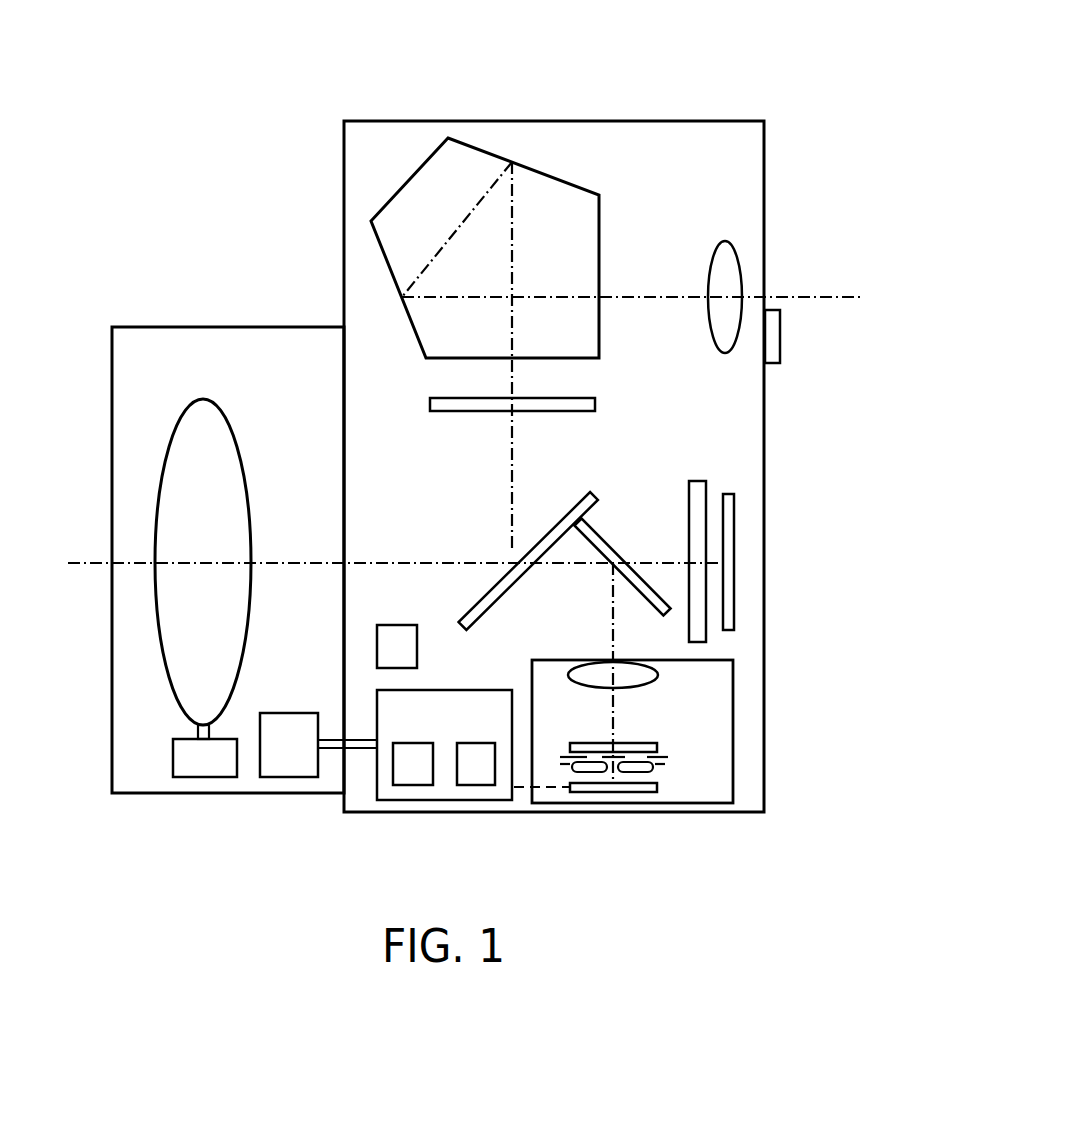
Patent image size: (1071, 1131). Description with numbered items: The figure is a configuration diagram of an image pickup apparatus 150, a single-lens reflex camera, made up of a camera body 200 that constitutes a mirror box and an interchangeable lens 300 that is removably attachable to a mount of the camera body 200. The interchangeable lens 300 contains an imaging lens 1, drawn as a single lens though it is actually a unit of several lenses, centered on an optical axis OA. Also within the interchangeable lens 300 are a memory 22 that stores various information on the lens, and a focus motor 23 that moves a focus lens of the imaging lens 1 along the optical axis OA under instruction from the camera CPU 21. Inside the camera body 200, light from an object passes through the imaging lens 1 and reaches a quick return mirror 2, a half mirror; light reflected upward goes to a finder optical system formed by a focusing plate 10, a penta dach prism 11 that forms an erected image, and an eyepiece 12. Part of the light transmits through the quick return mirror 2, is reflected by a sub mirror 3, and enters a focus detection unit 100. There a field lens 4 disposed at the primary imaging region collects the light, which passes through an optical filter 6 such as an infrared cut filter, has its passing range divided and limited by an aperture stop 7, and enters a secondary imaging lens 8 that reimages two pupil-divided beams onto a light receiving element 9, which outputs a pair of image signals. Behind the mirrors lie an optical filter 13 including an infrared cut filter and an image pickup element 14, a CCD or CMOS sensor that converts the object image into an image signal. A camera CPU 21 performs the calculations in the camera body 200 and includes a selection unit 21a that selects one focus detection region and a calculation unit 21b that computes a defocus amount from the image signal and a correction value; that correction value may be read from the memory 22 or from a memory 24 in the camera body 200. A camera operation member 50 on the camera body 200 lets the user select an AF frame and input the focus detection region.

The image pickup apparatus 150 is at (826, 33).
The camera body 200 is at (612, 143).
The interchangeable lens 300 is at (148, 350).
The focus detection unit 100 is at (592, 803).
The penta dach prism 11 is at (438, 182).
The focusing plate 10 is at (440, 398).
The eyepiece 12 is at (735, 253).
The camera operation member 50 is at (780, 342).
The quick return mirror 2 is at (480, 596).
The sub mirror 3 is at (592, 525).
The optical filter 13 is at (707, 484).
The image pickup element 14 is at (734, 594).
The field lens 4 is at (657, 672).
The optical filter 6 is at (657, 746).
The aperture stop 7 is at (665, 757).
The light receiving element 9 is at (657, 787).
The secondary imaging lens 8 is at (633, 773).
The imaging lens 1 is at (173, 687).
The optical axis OA is at (94, 562).
The focus motor 23 is at (185, 777).
The memory 22 is at (275, 777).
The memory 24 is at (377, 655).
The camera CPU 21 is at (440, 800).
The selection unit 21a is at (403, 786).
The calculation unit 21b is at (488, 786).